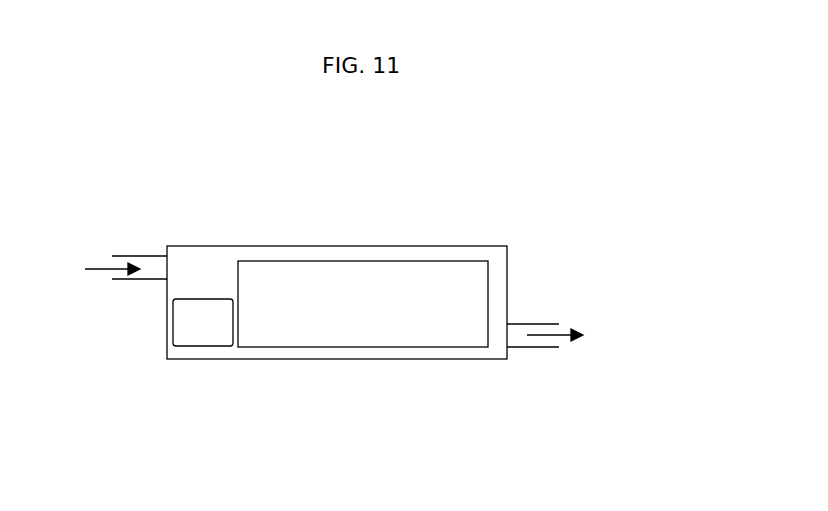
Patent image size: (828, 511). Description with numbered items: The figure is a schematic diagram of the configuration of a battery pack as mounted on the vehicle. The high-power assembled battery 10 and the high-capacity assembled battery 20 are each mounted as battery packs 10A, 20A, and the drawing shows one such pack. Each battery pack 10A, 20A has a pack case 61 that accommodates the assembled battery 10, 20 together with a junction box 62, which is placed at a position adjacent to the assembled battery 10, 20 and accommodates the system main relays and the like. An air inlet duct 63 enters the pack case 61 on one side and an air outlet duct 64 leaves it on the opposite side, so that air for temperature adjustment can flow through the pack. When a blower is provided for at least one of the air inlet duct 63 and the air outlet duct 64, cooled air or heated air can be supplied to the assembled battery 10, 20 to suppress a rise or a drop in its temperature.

The battery pack 10A is at (404, 271).
The battery pack 20A is at (404, 271).
The pack case 61 is at (358, 246).
The high-power assembled battery 10 is at (363, 339).
The high-capacity assembled battery 20 is at (363, 323).
The junction box 62 is at (205, 342).
The air inlet duct 63 is at (140, 255).
The air outlet duct 64 is at (528, 347).